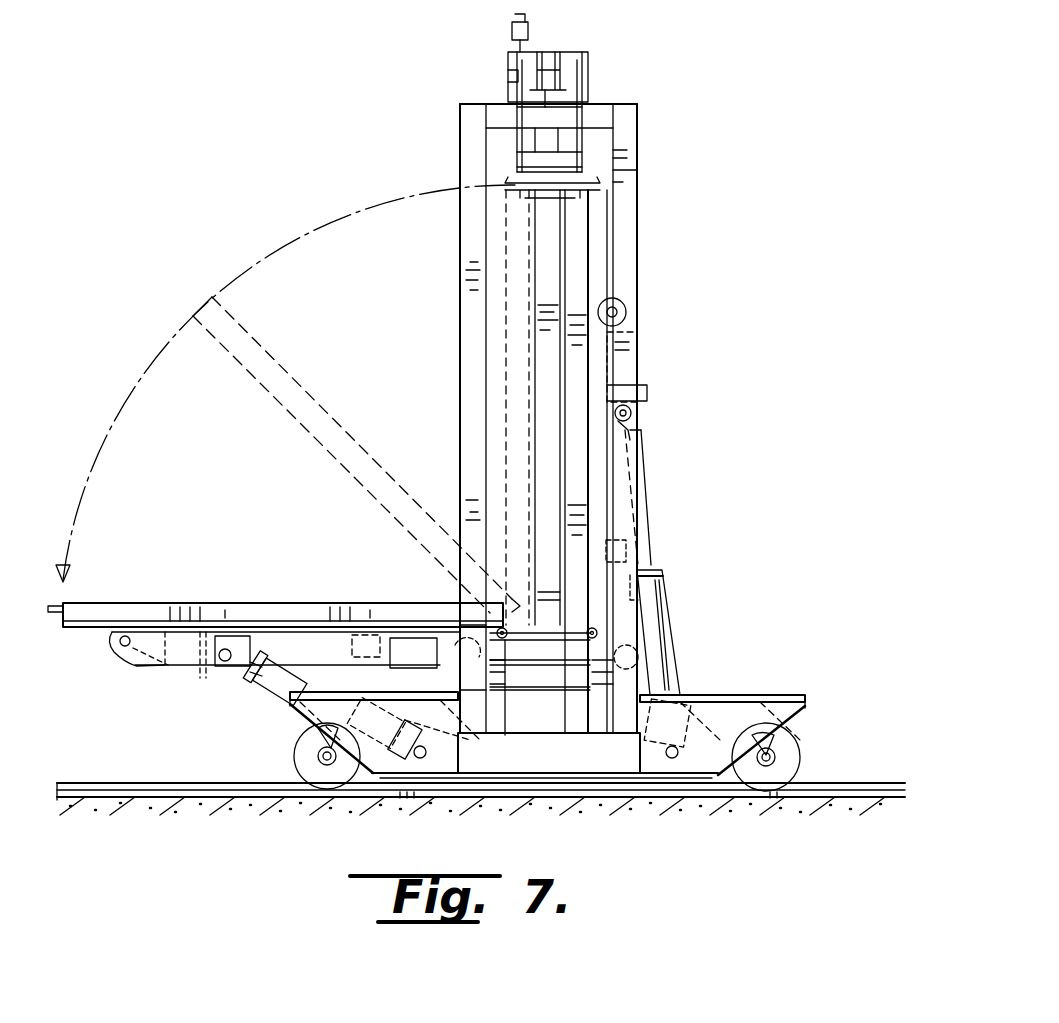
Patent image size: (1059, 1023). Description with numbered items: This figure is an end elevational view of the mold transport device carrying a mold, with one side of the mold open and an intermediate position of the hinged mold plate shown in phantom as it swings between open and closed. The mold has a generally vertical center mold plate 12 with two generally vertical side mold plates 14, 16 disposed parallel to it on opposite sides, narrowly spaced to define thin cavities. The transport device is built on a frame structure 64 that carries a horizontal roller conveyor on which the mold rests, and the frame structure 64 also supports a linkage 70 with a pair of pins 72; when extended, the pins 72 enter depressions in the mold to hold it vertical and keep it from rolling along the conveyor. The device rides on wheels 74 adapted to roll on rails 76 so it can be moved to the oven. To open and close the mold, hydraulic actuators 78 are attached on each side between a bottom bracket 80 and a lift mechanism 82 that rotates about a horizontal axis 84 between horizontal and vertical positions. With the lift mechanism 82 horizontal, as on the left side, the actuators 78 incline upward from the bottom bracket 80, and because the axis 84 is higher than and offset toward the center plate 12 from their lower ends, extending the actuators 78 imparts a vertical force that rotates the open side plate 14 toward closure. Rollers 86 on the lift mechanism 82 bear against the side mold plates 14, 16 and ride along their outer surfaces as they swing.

The center mold plate 12 is at (540, 224).
The side mold plate 14 is at (308, 386).
The side mold plate 16 is at (578, 266).
The frame structure 64 is at (470, 146).
The linkage 70 is at (562, 50).
The pins 72 is at (600, 192).
The wheels 74 is at (292, 758).
The rails 76 is at (138, 784).
The hydraulic actuators 78 is at (670, 628).
The bottom bracket 80 is at (435, 778).
The lift mechanism 82 is at (628, 338).
The horizontal axis 84 is at (636, 656).
The rollers 86 is at (628, 302).